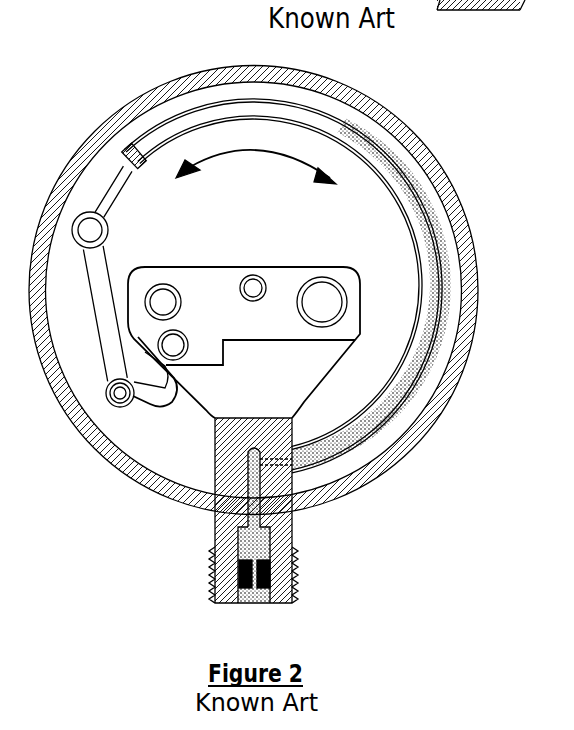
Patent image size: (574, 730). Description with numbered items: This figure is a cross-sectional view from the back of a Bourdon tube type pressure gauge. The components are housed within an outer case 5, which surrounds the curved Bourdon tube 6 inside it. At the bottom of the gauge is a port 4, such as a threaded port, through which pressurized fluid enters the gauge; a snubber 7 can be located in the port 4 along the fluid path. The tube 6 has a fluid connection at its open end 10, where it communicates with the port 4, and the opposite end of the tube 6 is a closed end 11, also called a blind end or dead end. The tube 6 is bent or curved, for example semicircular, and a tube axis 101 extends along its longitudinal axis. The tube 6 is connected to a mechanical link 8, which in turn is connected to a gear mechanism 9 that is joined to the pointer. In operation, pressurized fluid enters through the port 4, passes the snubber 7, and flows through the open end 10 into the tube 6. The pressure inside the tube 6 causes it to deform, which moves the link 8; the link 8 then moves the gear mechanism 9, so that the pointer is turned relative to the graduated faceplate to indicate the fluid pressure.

The port 4 is at (285, 530).
The outer case 5 is at (436, 165).
The Bourdon tube 6 is at (420, 232).
The snubber 7 is at (273, 565).
The mechanical link 8 is at (104, 190).
The gear mechanism 9 is at (150, 318).
The open end 10 is at (255, 465).
The closed end 11 is at (175, 128).
The tube axis 101 is at (250, 152).